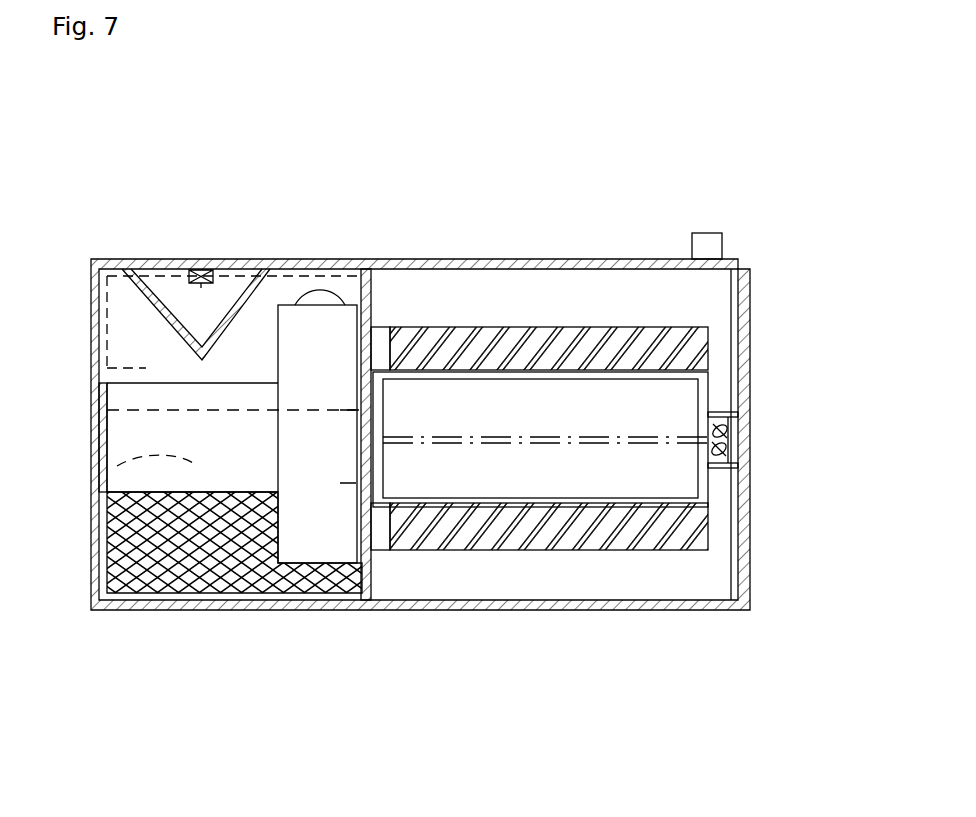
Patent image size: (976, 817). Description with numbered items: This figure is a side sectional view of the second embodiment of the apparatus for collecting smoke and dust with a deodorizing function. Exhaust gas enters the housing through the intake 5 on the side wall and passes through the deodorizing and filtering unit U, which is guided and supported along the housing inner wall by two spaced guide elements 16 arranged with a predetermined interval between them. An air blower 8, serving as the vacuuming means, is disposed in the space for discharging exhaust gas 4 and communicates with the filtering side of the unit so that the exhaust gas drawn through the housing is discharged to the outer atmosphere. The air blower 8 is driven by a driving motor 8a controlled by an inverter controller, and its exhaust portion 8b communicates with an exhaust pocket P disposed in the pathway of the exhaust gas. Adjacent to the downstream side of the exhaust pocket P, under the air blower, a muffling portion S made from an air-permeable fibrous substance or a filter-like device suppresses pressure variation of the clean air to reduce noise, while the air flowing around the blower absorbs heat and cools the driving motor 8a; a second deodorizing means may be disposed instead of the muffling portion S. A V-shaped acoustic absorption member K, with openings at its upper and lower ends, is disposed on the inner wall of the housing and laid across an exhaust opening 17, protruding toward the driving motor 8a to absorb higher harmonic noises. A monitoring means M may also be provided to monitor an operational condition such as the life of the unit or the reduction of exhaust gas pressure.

The deodorizing and filtering unit U is at (513, 316).
The exhaust pocket P is at (106, 368).
The acoustic absorption member K is at (150, 285).
The exhaust opening 17 is at (190, 260).
The monitoring means M is at (202, 282).
The space for discharging exhaust gas 4 is at (253, 335).
The air blower 8 is at (325, 387).
The exhaust portion 8b is at (318, 292).
The driving motor 8a is at (110, 484).
The muffling portion S is at (224, 562).
The guide elements 16 is at (723, 415).
The intake 5 is at (722, 236).